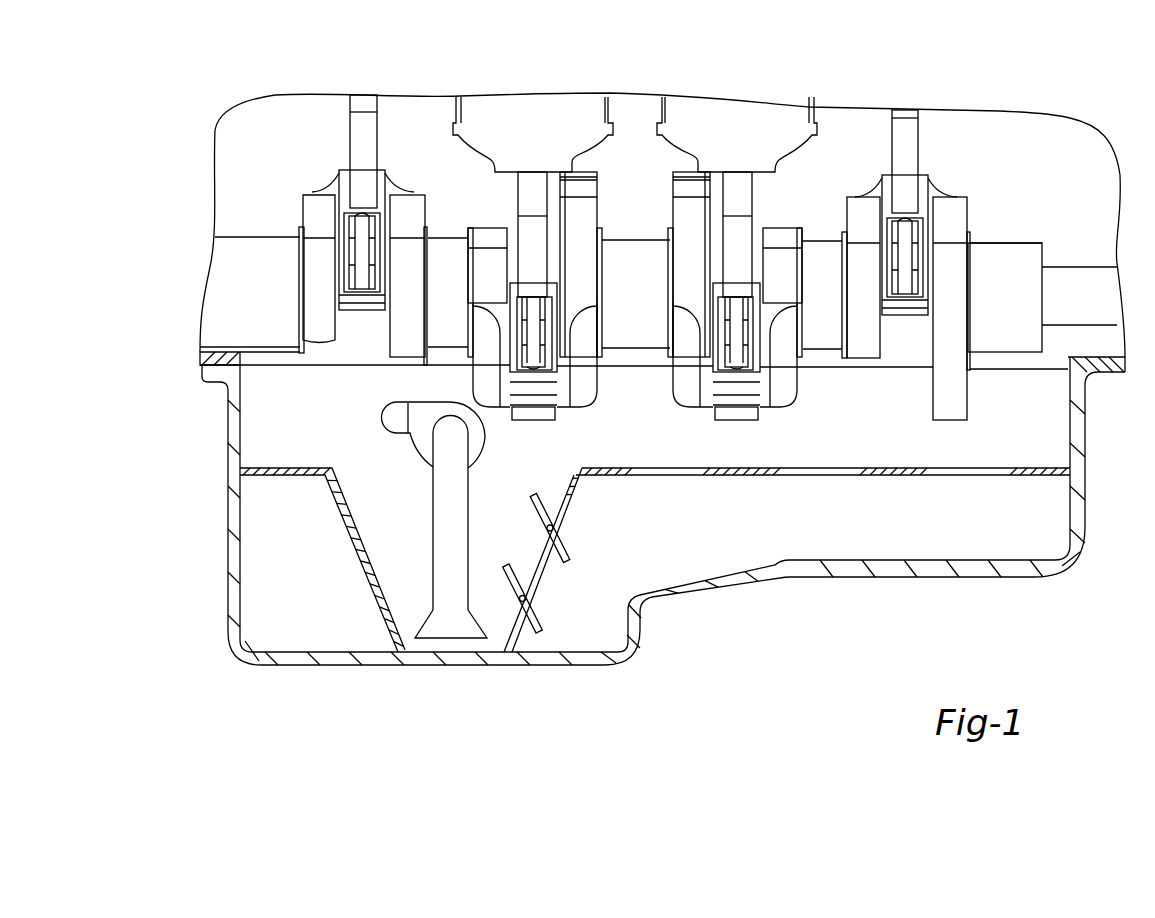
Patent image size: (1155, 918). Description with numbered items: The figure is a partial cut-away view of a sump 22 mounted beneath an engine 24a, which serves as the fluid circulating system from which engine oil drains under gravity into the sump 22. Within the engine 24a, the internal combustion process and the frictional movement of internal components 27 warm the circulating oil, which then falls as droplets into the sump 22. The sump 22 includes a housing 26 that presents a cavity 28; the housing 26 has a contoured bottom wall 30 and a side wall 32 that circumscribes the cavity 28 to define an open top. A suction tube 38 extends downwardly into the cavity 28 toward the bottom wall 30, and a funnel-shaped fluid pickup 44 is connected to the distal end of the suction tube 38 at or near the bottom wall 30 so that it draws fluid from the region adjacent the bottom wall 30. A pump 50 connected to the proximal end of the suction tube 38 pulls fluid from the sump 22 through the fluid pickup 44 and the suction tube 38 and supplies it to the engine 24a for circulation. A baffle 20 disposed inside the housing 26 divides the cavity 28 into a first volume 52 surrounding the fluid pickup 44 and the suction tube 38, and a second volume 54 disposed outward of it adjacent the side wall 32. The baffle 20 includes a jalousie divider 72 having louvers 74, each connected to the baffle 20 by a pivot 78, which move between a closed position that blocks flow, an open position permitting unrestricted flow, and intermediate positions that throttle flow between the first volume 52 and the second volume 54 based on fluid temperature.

The engine 24a is at (662, 228).
The internal components 27 is at (907, 322).
The baffle 20 is at (311, 464).
The sump 22 is at (657, 526).
The side wall 32 is at (232, 512).
The bottom wall 30 is at (335, 662).
The housing 26 is at (1075, 570).
The cavity 28 is at (613, 455).
The first volume 52 is at (505, 545).
The second volume 54 is at (285, 579).
The suction tube 38 is at (447, 498).
The fluid pickup 44 is at (437, 626).
The pump 50 is at (447, 432).
The jalousie divider 72 is at (566, 544).
The louvers 74 is at (545, 495).
The pivot 78 is at (553, 528).